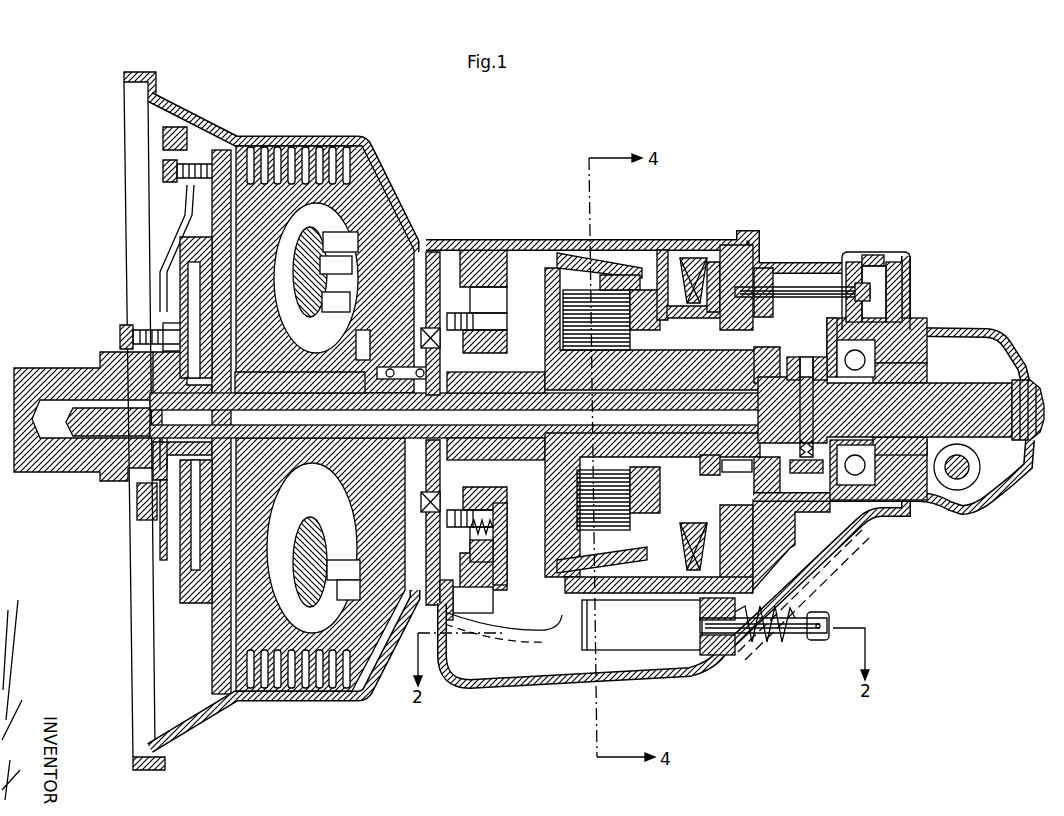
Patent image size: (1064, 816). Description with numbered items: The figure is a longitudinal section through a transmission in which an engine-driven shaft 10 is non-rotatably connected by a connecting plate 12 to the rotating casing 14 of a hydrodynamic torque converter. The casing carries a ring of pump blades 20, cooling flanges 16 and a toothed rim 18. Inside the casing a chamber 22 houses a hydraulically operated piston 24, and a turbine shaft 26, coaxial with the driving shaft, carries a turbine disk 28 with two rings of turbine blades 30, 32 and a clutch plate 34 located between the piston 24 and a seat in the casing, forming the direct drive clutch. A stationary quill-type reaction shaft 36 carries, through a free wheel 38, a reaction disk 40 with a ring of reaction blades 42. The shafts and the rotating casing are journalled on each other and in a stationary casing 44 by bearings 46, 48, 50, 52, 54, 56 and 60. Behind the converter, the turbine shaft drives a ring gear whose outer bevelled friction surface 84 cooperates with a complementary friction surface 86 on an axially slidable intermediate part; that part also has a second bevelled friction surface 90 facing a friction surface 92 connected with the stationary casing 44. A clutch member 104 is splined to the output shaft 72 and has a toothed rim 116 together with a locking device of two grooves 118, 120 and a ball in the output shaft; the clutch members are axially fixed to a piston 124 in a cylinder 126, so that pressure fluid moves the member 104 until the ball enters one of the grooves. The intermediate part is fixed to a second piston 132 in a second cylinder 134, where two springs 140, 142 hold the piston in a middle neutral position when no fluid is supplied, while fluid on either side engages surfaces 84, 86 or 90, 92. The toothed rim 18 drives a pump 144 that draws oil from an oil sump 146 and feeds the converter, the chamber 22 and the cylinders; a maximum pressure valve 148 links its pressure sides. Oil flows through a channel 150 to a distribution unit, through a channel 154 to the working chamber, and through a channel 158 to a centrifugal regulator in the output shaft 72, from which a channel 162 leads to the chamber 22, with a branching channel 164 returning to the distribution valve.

The shaft 10 is at (86, 468).
The connecting plate 12 is at (175, 233).
The rotating casing 14 is at (362, 170).
The cooling flanges 16 is at (273, 143).
The toothed rim 18 is at (505, 312).
The ring of pump blades 20 is at (273, 258).
The chamber 22 is at (172, 298).
The hydraulically operated piston 24 is at (211, 233).
The turbine shaft 26 is at (215, 403).
The turbine disk 28 is at (340, 349).
The ring of turbine blades 30 is at (352, 233).
The ring of turbine blades 32 is at (341, 306).
The clutch plate 34 is at (262, 497).
The reaction shaft 36 is at (512, 362).
The free wheel 38 is at (356, 492).
The reaction disk 40 is at (356, 337).
The ring of reaction blades 42 is at (338, 265).
The stationary casing 44 is at (301, 142).
The bearing 46 is at (137, 494).
The bearing 48 is at (336, 478).
The bearing 50 is at (417, 447).
The bearing 52 is at (361, 506).
The bearing 54 is at (457, 460).
The bearing 56 is at (509, 342).
The bearing 60 is at (508, 447).
The output shaft 72 is at (985, 393).
The outer bevelled friction surface 84 is at (548, 263).
The friction surface 86 is at (558, 253).
The second bevelled friction surface 90 is at (596, 258).
The friction surface 92 is at (626, 250).
The clutch member 104 is at (765, 370).
The toothed rim 116 is at (748, 495).
The groove 118 is at (752, 470).
The groove 120 is at (755, 483).
The piston 124 is at (858, 262).
The cylinder 126 is at (888, 262).
The second piston 132 is at (748, 237).
The second cylinder 134 is at (702, 258).
The spring 140 is at (748, 264).
The spring 142 is at (690, 262).
The pump 144 is at (500, 290).
The oil sump 146 is at (540, 662).
The maximum pressure valve 148 is at (486, 556).
The channel 150 is at (497, 590).
The channel 154 is at (480, 437).
The channel 158 is at (851, 503).
The channel 162 is at (372, 427).
The branching channel 164 is at (524, 438).